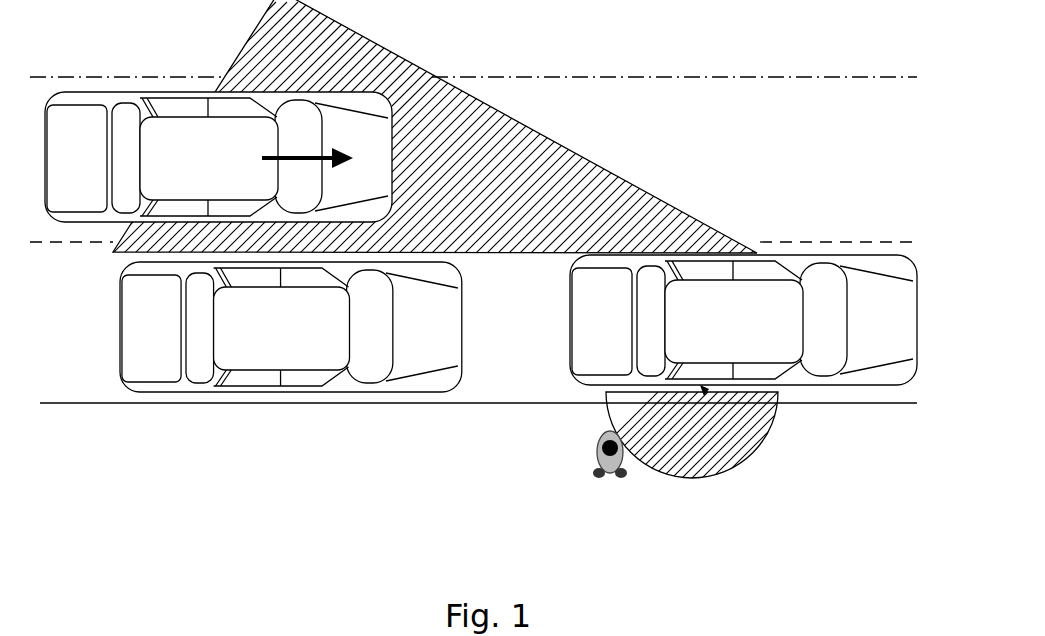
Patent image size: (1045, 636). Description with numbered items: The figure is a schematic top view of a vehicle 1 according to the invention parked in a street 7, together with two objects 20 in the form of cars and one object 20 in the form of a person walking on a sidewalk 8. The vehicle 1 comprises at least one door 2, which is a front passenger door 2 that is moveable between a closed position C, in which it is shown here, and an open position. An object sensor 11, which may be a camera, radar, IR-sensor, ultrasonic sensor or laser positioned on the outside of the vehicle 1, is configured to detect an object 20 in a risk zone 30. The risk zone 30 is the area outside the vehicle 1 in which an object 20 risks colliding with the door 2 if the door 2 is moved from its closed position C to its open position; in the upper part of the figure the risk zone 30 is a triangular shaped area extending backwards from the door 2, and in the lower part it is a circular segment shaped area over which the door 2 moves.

The vehicle 1 is at (749, 373).
The door 2 is at (704, 301).
The street 7 is at (473, 75).
The sidewalk 8 is at (432, 458).
The object sensor 11 is at (484, 207).
The object 20 is at (196, 168).
The risk zone 30 is at (506, 247).
The closed position C is at (751, 300).